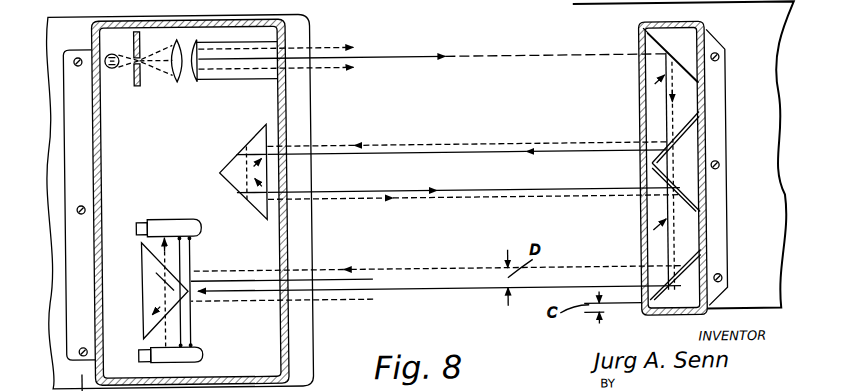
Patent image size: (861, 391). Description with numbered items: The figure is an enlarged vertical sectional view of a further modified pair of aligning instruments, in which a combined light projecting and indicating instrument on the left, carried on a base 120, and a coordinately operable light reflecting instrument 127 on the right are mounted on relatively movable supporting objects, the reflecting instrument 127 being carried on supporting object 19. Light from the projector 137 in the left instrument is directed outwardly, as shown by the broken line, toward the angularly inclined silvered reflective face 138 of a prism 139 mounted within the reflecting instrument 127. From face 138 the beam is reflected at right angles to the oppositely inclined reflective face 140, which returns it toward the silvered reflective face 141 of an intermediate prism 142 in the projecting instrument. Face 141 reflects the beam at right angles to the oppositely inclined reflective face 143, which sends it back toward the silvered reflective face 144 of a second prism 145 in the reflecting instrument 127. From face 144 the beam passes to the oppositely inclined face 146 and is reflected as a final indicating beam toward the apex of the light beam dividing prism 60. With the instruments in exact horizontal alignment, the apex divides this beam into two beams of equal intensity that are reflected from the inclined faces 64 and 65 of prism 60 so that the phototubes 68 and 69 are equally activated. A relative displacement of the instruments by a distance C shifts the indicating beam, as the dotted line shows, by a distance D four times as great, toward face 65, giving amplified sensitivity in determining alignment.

The mounting base plate 120 is at (83, 109).
The projector 137 is at (114, 45).
The silvered reflective face 138 is at (745, 62).
The light reflecting instrument 127 is at (691, 45).
The supporting object 19 is at (751, 268).
The prism 139 is at (691, 95).
The oppositely inclined reflective face 140 is at (693, 133).
The silvered reflective face 144 is at (663, 180).
The second prism 145 is at (694, 228).
The oppositely inclined face 146 is at (703, 255).
The silvered reflective face 141 is at (237, 153).
The intermediate prism 142 is at (218, 173).
The oppositely inclined reflective face 143 is at (247, 205).
The phototube 69 is at (158, 218).
The inclined face 65 is at (141, 242).
The light beam dividing prism 60 is at (150, 282).
The inclined face 64 is at (150, 336).
The phototube 68 is at (200, 354).